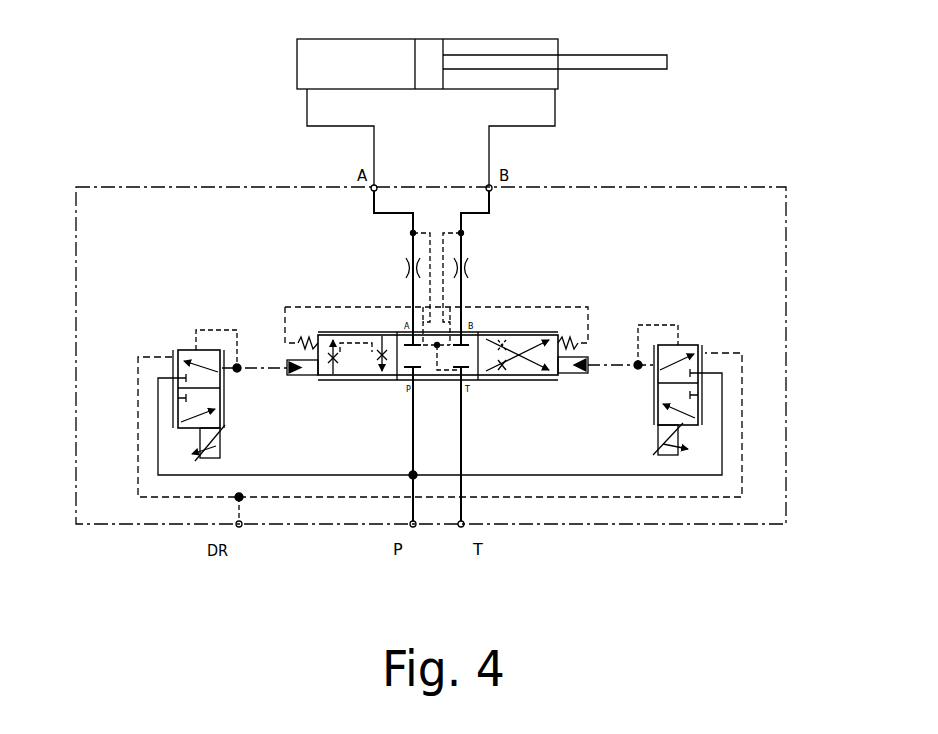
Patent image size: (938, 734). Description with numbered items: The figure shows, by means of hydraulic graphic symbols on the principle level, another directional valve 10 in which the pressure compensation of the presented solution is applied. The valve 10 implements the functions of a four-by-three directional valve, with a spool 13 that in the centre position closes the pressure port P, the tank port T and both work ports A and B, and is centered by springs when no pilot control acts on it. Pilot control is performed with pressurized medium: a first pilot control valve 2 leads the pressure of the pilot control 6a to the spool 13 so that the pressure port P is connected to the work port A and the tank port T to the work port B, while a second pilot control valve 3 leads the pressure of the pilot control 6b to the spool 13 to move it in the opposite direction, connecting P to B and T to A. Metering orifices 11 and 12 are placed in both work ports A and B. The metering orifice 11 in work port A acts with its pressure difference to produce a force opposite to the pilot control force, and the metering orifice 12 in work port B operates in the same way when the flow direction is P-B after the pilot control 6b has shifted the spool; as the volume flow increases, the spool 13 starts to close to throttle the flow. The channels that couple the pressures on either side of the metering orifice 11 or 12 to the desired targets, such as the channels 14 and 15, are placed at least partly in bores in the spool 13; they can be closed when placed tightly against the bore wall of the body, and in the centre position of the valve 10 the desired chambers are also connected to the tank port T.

The valve 10 is at (258, 187).
The first pilot control valve 2 is at (126, 395).
The second pilot control valve 3 is at (734, 405).
The metering orifice 11 is at (405, 269).
The metering orifice 12 is at (467, 269).
The pilot control 6a is at (288, 376).
The pilot control 6b is at (585, 374).
The spool 13 is at (352, 351).
The channel 14 is at (345, 372).
The channel 15 is at (445, 373).